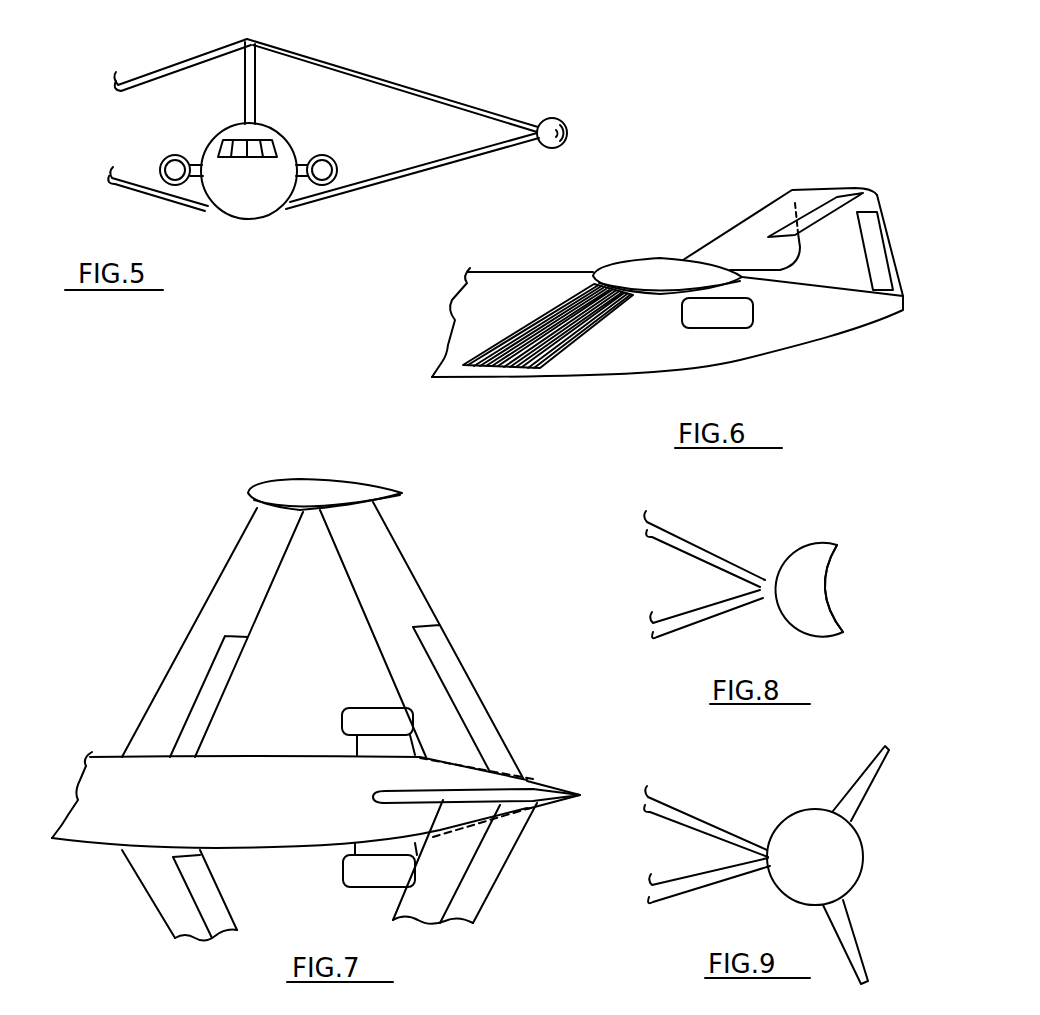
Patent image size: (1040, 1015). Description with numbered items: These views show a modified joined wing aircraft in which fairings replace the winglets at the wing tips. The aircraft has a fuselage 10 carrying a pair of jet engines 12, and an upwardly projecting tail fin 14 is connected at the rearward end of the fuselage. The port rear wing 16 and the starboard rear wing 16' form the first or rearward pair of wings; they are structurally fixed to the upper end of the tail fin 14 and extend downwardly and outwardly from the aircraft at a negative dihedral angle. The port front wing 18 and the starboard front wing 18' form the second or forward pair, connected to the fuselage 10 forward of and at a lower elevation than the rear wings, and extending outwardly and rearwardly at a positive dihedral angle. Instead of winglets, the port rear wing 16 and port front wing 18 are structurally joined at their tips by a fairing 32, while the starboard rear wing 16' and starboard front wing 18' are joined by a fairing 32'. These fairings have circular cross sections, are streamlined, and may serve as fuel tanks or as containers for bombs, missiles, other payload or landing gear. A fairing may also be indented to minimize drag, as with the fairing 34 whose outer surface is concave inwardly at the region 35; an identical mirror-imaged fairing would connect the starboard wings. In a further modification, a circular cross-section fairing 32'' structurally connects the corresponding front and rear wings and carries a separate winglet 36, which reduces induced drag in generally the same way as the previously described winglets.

In FIG. 5, the fuselage 10 is at (261, 154).
In FIG. 6, the fuselage 10 is at (651, 322).
In FIG. 7, the fuselage 10 is at (292, 769).
In FIG. 5, the jet engines 12 is at (275, 161).
In FIG. 6, the jet engines 12 is at (717, 328).
In FIG. 7, the jet engines 12 is at (357, 779).
In FIG. 5, the tail fin 14 is at (213, 83).
In FIG. 6, the tail fin 14 is at (876, 237).
In FIG. 7, the tail fin 14 is at (476, 766).
In FIG. 5, the port rear wing 16 is at (392, 83).
In FIG. 6, the port rear wing 16 is at (780, 224).
In FIG. 7, the port rear wing 16 is at (465, 862).
In FIG. 8, the port rear wing 16 is at (704, 547).
In FIG. 9, the port rear wing 16 is at (706, 815).
In FIG. 5, the port front wing 18 is at (412, 171).
In FIG. 6, the port front wing 18 is at (548, 346).
In FIG. 7, the port front wing 18 is at (179, 898).
In FIG. 8, the port front wing 18 is at (701, 603).
In FIG. 9, the port front wing 18 is at (706, 872).
In FIG. 5, the starboard rear wing 16' is at (179, 59).
In FIG. 7, the starboard rear wing 16' is at (421, 640).
In FIG. 5, the starboard front wing 18' is at (149, 167).
In FIG. 7, the starboard front wing 18' is at (218, 632).
In FIG. 5, the fairing 32 is at (553, 105).
In FIG. 6, the fairing 32 is at (667, 250).
In FIG. 7, the fairing 32' is at (325, 469).
In FIG. 9, the fairing 32'' is at (815, 831).
In FIG. 8, the indented fairing 34 is at (821, 565).
In FIG. 8, the concave outer surface 35 is at (857, 588).
In FIG. 9, the winglet 36 is at (859, 838).